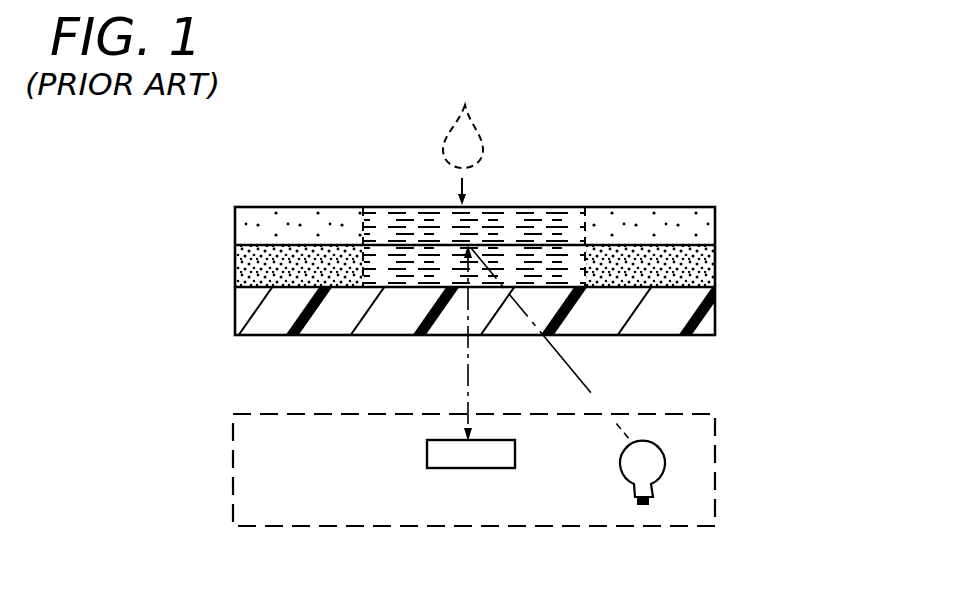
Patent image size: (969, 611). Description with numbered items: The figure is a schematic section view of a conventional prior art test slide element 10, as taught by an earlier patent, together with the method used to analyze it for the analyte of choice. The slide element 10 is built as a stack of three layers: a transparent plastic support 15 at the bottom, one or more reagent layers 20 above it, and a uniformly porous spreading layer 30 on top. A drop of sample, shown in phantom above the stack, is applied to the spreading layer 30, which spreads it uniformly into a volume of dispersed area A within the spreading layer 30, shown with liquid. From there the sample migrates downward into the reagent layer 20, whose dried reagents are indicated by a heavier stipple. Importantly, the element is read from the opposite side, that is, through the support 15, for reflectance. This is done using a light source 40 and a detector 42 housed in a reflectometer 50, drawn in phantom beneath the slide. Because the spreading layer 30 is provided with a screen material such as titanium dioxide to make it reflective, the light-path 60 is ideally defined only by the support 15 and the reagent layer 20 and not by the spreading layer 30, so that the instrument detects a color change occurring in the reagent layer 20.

The slide element 10 is at (818, 215).
The porous spreading layer 30 is at (716, 224).
The reagent layer 20 is at (716, 263).
The transparent plastic support 15 is at (716, 318).
The dispersed area A is at (525, 226).
The light-path 60 is at (600, 402).
The reflectometer 50 is at (716, 483).
The detector 42 is at (495, 468).
The light source 40 is at (652, 488).